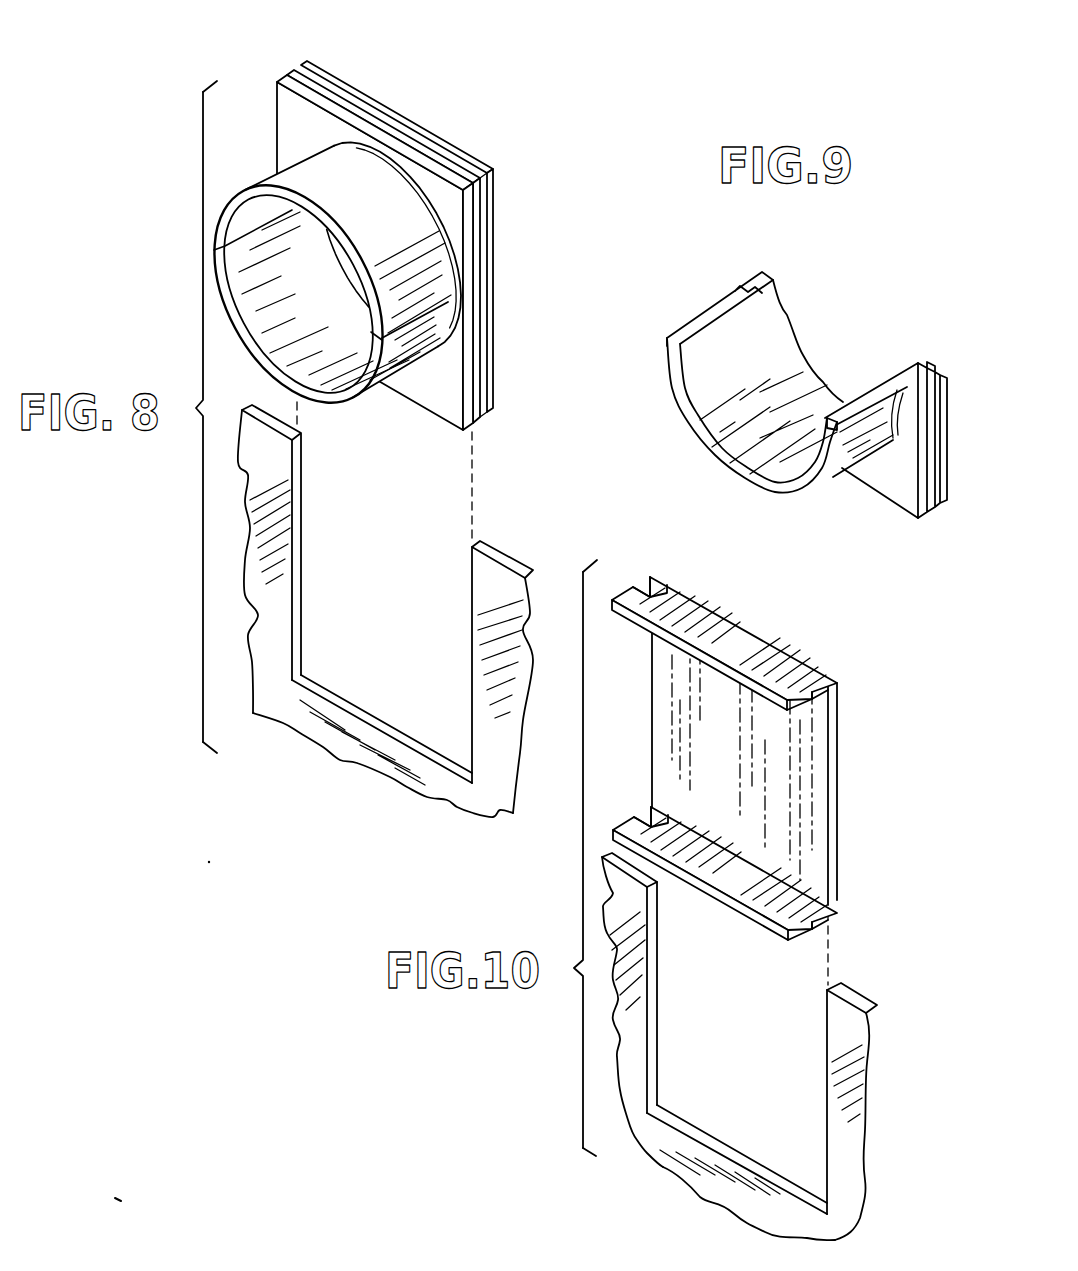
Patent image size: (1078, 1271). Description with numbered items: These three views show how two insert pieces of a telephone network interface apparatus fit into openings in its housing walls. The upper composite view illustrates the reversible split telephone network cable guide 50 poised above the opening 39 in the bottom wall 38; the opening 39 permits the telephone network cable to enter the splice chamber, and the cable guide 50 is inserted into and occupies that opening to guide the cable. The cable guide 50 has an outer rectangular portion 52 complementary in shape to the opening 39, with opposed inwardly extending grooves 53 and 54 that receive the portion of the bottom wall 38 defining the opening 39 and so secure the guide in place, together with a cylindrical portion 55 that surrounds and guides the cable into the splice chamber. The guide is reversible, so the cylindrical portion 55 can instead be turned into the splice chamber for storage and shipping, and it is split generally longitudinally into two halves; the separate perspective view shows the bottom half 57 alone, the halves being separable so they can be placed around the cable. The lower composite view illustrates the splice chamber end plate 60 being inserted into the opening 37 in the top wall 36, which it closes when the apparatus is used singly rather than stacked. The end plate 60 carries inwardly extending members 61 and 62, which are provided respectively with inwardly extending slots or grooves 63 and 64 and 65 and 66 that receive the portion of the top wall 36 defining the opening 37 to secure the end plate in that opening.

In FIG. 10, the top wall 36 is at (856, 1080).
In FIG. 10, the opening in top wall 37 is at (768, 1082).
In FIG. 8, the bottom wall 38 is at (478, 580).
In FIG. 8, the opening in bottom wall 39 is at (407, 649).
In FIG. 8, the reversible split telephone network cable guide 50 is at (528, 185).
In FIG. 8, the outer rectangular portion 52 is at (277, 90).
In FIG. 8, the groove 53 is at (293, 71).
In FIG. 8, the groove 54 is at (488, 265).
In FIG. 8, the cylindrical portion 55 is at (262, 152).
In FIG. 9, the bottom half 57 is at (693, 305).
In FIG. 10, the end plate 60 is at (836, 778).
In FIG. 10, the inwardly extending member 61 is at (734, 640).
In FIG. 10, the inwardly extending member 62 is at (726, 878).
In FIG. 10, the slot or groove 63 is at (824, 682).
In FIG. 10, the slot or groove 64 is at (642, 574).
In FIG. 10, the slot or groove 65 is at (822, 913).
In FIG. 10, the slot or groove 66 is at (651, 815).